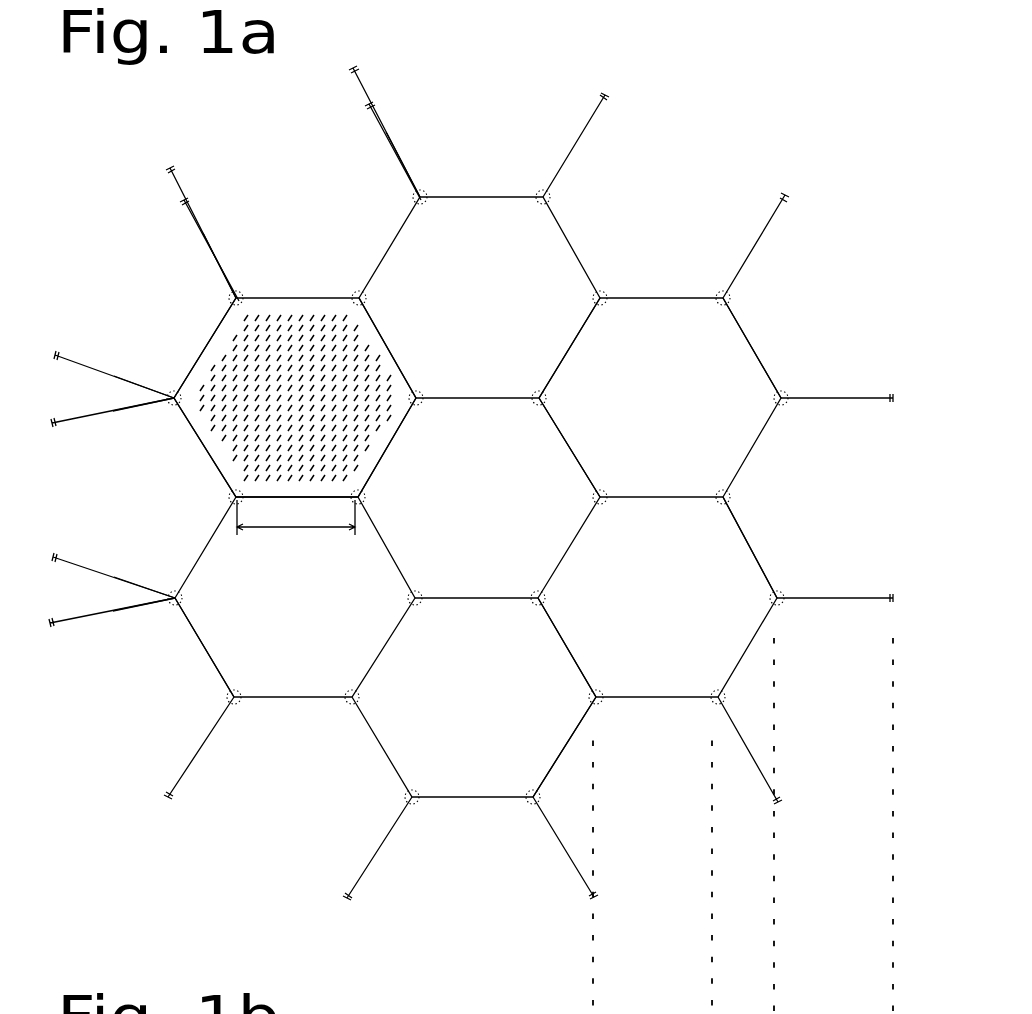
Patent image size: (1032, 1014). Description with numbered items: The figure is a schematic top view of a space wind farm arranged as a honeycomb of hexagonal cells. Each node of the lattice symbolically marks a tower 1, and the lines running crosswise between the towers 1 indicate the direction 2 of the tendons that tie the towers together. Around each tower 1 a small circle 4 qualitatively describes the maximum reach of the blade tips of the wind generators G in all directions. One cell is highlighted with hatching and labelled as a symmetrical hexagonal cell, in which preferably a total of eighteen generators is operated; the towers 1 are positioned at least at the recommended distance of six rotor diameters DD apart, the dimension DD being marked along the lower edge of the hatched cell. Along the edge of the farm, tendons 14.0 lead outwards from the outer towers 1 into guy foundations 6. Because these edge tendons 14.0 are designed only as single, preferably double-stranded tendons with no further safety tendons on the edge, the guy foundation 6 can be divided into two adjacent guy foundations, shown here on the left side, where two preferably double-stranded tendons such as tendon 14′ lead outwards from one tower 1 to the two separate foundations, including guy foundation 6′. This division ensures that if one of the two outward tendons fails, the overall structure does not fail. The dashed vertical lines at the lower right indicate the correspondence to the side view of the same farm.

The tower 1 is at (726, 306).
The direction of the tendons 2 is at (667, 297).
The circle 4 is at (608, 283).
The guy foundation 6 is at (612, 107).
The guy foundation 6′ is at (366, 108).
The tendon 14′ is at (212, 256).
The tendon positioned on the edge 14.0 is at (578, 163).
The rotor diameter DD is at (296, 517).
The wind generator G is at (435, 216).